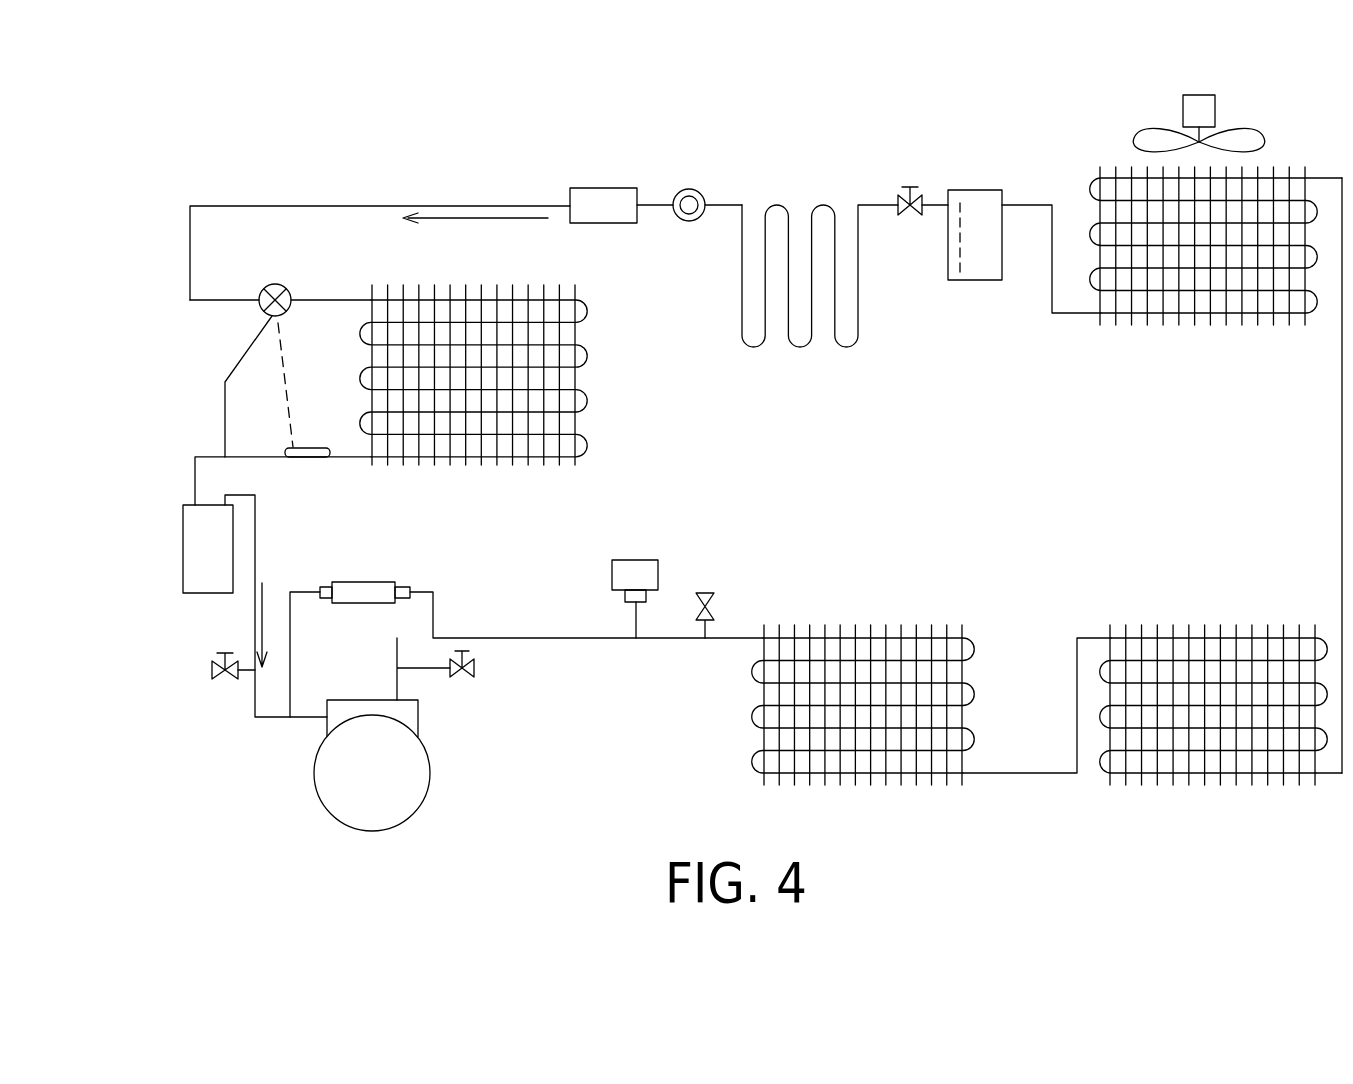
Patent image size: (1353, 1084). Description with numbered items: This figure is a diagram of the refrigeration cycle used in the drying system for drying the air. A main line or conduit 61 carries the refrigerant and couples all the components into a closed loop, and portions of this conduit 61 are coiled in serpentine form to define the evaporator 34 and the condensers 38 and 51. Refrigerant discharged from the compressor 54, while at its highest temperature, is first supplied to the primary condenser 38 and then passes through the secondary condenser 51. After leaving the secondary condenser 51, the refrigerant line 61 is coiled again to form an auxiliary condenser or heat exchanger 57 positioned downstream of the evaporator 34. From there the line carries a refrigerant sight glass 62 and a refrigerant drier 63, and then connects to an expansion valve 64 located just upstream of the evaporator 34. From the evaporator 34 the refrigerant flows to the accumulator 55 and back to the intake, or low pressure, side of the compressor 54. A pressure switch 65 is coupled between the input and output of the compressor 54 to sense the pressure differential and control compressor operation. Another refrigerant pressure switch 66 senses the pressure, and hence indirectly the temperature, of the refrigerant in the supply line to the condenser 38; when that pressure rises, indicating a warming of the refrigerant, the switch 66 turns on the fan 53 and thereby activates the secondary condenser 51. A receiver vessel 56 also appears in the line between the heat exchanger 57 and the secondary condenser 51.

The evaporator 34 is at (581, 405).
The primary condenser 38 is at (870, 637).
The secondary condenser 51 is at (1100, 178).
The fan 53 is at (1138, 130).
The compressor 54 is at (415, 797).
The accumulator 55 is at (183, 535).
The receiver 56 is at (980, 205).
The auxiliary condenser or heat exchanger 57 is at (823, 203).
The main line or conduit 61 is at (1342, 425).
The refrigerant sight glass 62 is at (695, 192).
The refrigerant drier 63 is at (607, 205).
The expansion valve 64 is at (268, 318).
The pressure switch 65 is at (362, 590).
The refrigerant pressure switch 66 is at (622, 560).